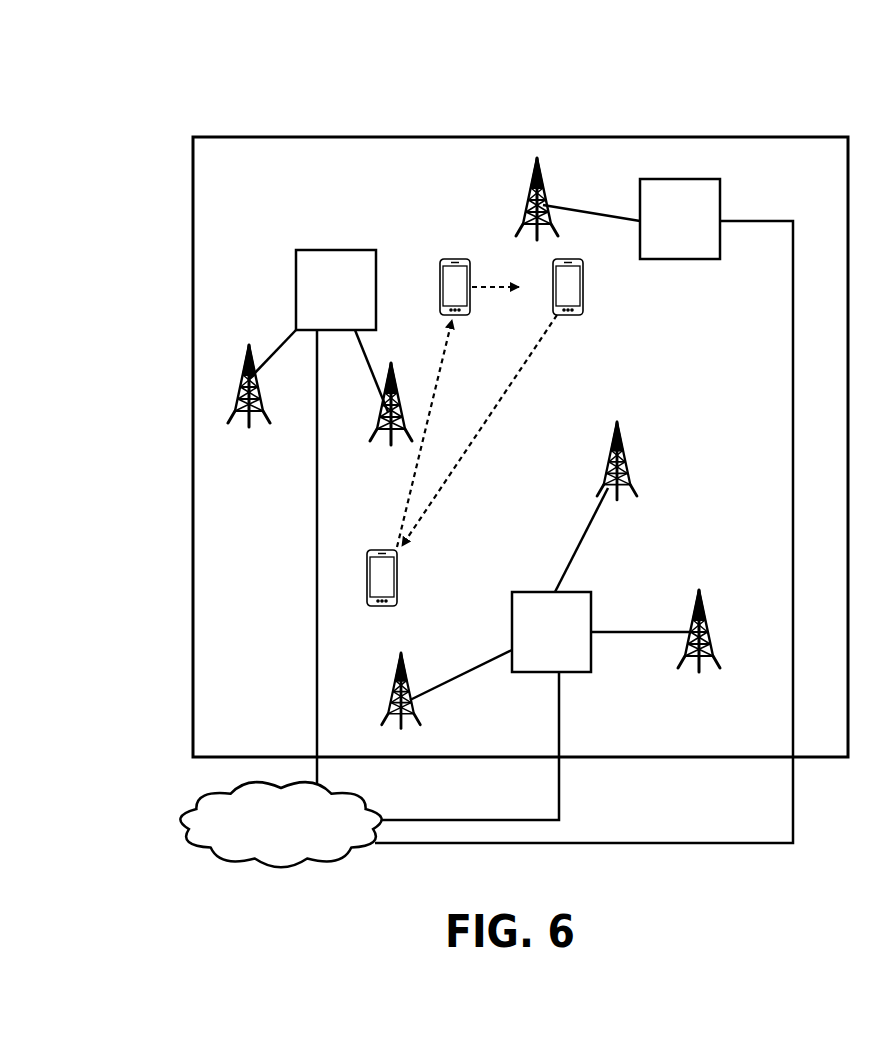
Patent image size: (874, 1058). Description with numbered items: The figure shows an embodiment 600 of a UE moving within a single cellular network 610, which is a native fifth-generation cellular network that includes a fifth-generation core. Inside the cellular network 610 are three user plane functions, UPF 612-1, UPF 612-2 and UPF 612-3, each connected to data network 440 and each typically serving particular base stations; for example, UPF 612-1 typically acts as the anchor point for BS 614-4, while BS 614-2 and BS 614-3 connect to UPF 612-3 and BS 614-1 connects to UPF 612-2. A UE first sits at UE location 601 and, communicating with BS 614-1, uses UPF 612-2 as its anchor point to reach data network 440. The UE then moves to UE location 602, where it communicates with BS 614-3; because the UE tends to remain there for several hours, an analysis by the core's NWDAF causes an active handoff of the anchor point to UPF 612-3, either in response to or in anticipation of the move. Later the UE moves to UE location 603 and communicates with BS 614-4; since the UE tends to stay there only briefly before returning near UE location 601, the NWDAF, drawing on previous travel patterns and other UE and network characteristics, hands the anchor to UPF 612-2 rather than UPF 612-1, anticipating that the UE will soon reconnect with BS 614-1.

The embodiment 600 is at (110, 80).
The cellular network 610 is at (834, 137).
The UPF 612-1 is at (362, 250).
The UPF 612-2 is at (664, 259).
The UPF 612-3 is at (520, 592).
The BS 614-1 is at (524, 212).
The BS 614-2 is at (610, 446).
The BS 614-3 is at (394, 690).
The BS 614-4 is at (392, 440).
The UE location 601 is at (553, 292).
The UE location 602 is at (378, 550).
The UE location 603 is at (455, 259).
The data network 440 is at (280, 824).